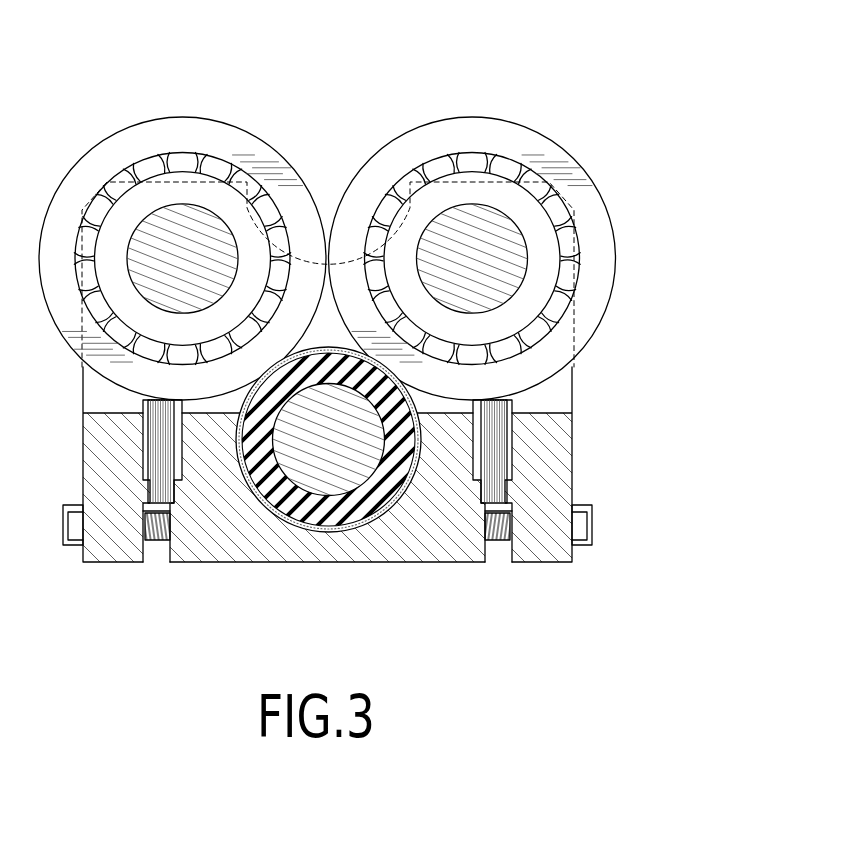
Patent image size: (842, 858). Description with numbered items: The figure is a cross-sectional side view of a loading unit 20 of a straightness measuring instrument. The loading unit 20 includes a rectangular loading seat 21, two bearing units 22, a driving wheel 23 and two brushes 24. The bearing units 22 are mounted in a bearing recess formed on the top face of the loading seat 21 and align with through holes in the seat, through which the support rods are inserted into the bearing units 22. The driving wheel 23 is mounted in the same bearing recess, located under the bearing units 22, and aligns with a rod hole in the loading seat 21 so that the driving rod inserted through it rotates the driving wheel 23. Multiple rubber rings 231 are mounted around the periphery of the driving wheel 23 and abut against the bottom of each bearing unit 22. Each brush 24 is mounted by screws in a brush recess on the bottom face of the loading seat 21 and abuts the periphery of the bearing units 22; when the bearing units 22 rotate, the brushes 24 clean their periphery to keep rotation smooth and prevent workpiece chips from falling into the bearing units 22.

The loading unit 20 is at (398, 88).
The loading seat 21 is at (573, 422).
The bearing unit 22 is at (538, 132).
The driving wheel 23 is at (263, 517).
The rubber ring 231 is at (334, 531).
The brush 24 is at (490, 453).